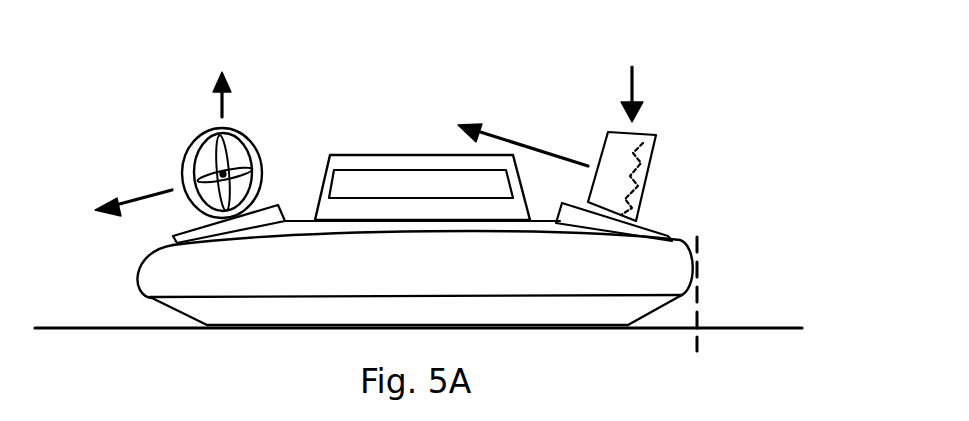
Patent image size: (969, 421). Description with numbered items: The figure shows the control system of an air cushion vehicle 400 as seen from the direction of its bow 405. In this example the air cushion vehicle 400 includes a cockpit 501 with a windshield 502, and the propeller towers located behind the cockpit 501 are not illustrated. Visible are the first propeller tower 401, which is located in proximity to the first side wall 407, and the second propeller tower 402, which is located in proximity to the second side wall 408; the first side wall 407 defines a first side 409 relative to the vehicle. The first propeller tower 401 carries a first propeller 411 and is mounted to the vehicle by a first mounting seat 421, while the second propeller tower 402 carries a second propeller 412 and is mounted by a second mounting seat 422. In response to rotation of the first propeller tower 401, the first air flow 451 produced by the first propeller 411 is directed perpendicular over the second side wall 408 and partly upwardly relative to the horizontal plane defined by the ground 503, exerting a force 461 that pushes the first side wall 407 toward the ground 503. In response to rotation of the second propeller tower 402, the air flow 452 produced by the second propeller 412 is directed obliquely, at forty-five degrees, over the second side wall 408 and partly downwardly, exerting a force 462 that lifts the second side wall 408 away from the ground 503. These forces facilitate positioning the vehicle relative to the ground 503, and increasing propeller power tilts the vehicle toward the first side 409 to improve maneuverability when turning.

The air cushion vehicle 400 is at (595, 329).
The first propeller tower 401 is at (657, 135).
The second propeller tower 402 is at (182, 153).
The bow 405 is at (412, 280).
The first side wall 407 is at (305, 213).
The second side wall 408 is at (138, 276).
The first side 409 is at (773, 317).
The first propeller 411 is at (689, 151).
The second propeller 412 is at (160, 148).
The first mounting seat 421 is at (652, 232).
The second mounting seat 422 is at (248, 220).
The first air flow 451 is at (556, 150).
The air flow 452 is at (140, 193).
The force 461 is at (632, 67).
The force 462 is at (220, 70).
The cockpit 501 is at (368, 154).
The windshield 502 is at (422, 185).
The ground 503 is at (129, 330).